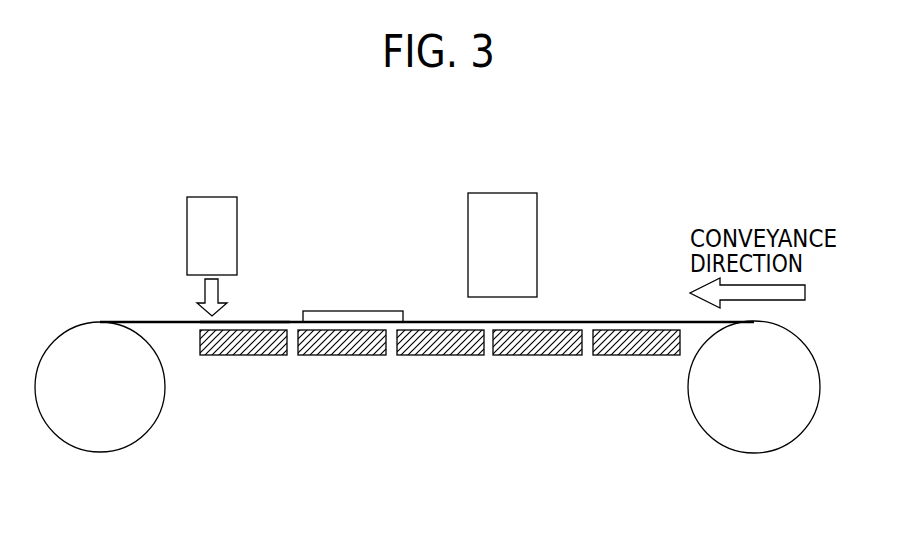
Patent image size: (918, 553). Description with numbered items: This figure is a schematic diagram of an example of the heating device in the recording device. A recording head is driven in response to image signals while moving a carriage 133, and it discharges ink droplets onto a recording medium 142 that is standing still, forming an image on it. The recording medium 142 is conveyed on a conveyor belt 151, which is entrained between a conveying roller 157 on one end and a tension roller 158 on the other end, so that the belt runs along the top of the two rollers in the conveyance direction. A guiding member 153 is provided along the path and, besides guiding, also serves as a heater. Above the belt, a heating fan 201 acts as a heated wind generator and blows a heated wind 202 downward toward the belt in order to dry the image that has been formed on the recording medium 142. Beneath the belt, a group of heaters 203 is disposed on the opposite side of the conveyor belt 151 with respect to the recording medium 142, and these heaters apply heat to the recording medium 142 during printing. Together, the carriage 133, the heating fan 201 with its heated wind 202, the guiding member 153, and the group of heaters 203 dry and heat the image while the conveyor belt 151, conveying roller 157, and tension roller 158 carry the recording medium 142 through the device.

The carriage 133 is at (503, 192).
The recording medium 142 is at (368, 310).
The conveyor belt 151 is at (597, 321).
The guiding member 153 is at (252, 311).
The conveying roller 157 is at (100, 453).
The tension roller 158 is at (750, 453).
The heating fan 201 is at (204, 196).
The heated wind 202 is at (182, 281).
The group of heaters 203 is at (362, 356).